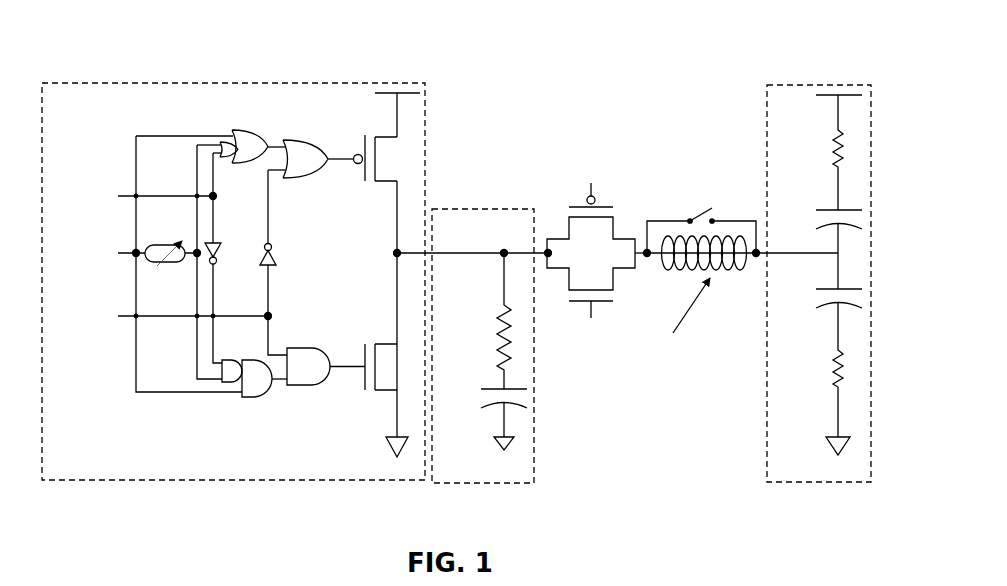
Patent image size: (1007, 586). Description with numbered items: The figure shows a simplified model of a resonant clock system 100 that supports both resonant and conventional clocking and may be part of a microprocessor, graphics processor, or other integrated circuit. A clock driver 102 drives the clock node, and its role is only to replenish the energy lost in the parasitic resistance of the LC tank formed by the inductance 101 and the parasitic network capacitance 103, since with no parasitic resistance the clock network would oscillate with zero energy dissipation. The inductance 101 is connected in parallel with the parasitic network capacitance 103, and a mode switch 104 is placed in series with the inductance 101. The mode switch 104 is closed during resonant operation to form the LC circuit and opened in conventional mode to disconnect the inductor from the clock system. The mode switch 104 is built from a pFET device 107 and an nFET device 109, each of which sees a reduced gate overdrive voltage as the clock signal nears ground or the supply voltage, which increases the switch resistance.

The resonant clock system 100 is at (527, 78).
The inductance 101 is at (727, 282).
The clock driver 102 is at (238, 481).
The parasitic network capacitance 103 is at (523, 398).
The mode switch 104 is at (616, 146).
The pFET device 107 is at (618, 222).
The nFET device 109 is at (617, 297).